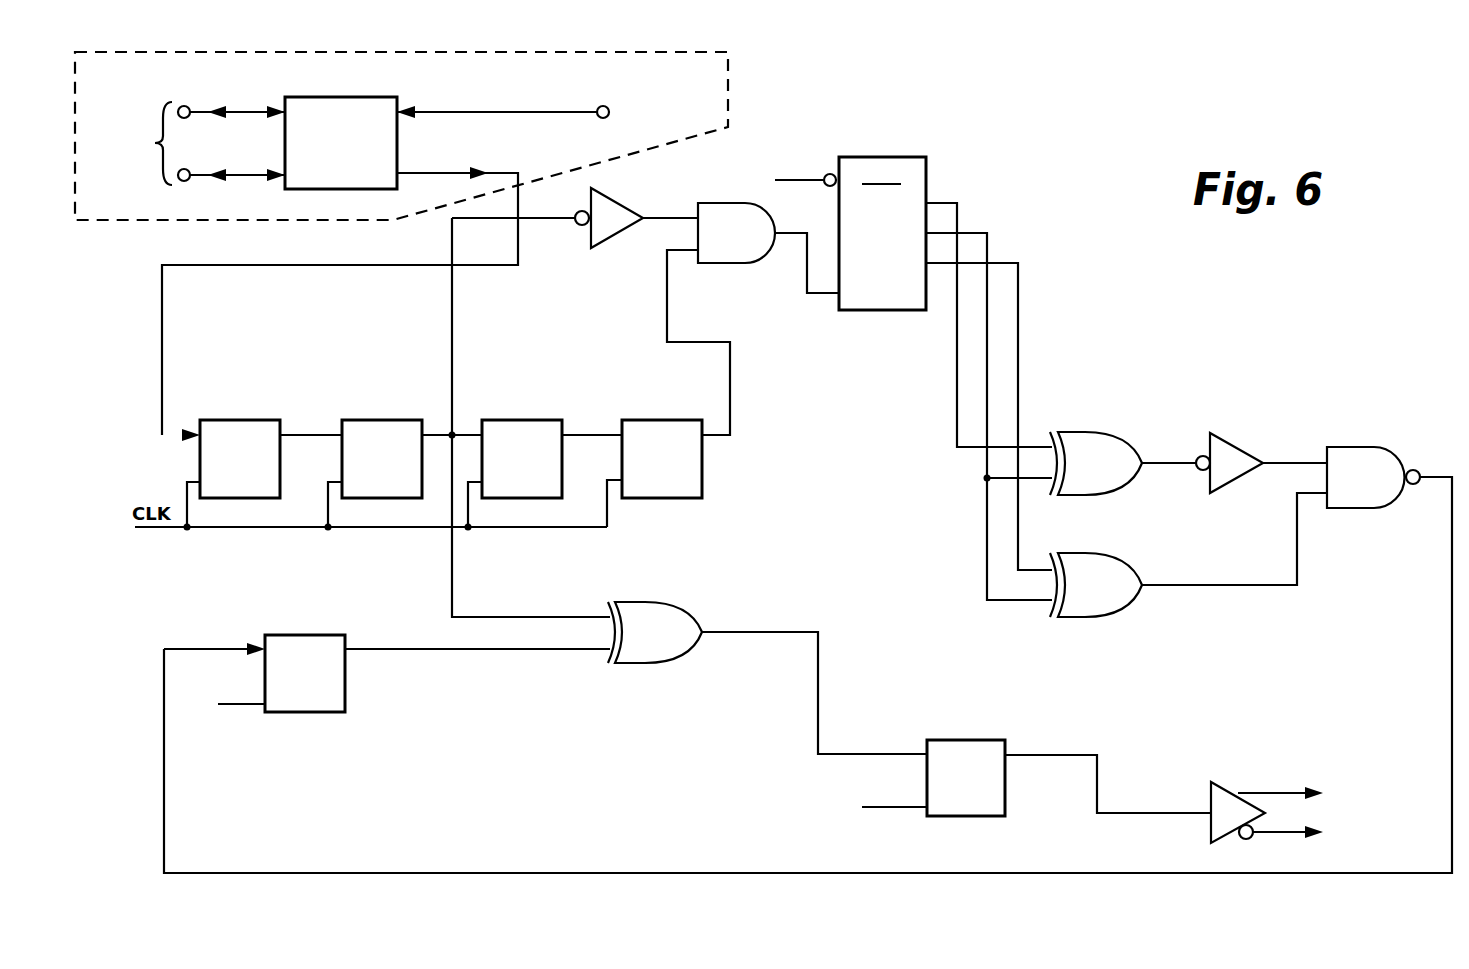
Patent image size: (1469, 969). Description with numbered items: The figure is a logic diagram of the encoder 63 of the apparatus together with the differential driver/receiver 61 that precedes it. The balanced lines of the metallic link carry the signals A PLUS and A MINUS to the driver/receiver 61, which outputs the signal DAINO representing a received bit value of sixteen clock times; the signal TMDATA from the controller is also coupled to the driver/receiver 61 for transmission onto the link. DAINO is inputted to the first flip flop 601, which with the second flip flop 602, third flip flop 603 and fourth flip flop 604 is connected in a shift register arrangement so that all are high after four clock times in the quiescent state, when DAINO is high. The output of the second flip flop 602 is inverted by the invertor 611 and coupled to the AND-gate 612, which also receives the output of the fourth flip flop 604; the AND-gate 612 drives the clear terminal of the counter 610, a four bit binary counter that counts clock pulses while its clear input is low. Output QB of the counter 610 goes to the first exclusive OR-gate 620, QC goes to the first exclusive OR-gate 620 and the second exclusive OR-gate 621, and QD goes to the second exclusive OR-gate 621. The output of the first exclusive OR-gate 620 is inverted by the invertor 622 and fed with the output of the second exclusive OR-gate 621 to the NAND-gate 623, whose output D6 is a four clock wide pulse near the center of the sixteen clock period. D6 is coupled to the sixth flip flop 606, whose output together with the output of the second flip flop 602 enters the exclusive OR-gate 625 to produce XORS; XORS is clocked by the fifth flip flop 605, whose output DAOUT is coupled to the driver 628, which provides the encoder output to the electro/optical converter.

The differential driver/receiver 61 is at (121, 84).
The encoder 63 is at (1016, 128).
The first flip flop 601 is at (250, 420).
The second flip flop 602 is at (390, 420).
The third flip flop 603 is at (530, 420).
The fourth flip flop 604 is at (670, 420).
The fifth flip flop 605 is at (958, 740).
The sixth flip flop 606 is at (295, 635).
The counter 610 is at (870, 157).
The invertor 611 is at (618, 201).
The AND-gate 612 is at (732, 264).
The first exclusive OR-gate 620 is at (1090, 432).
The second exclusive OR-gate 621 is at (1090, 553).
The invertor 622 is at (1217, 437).
The NAND-gate 623 is at (1352, 447).
The exclusive OR-gate 625 is at (683, 604).
The driver 628 is at (1225, 790).